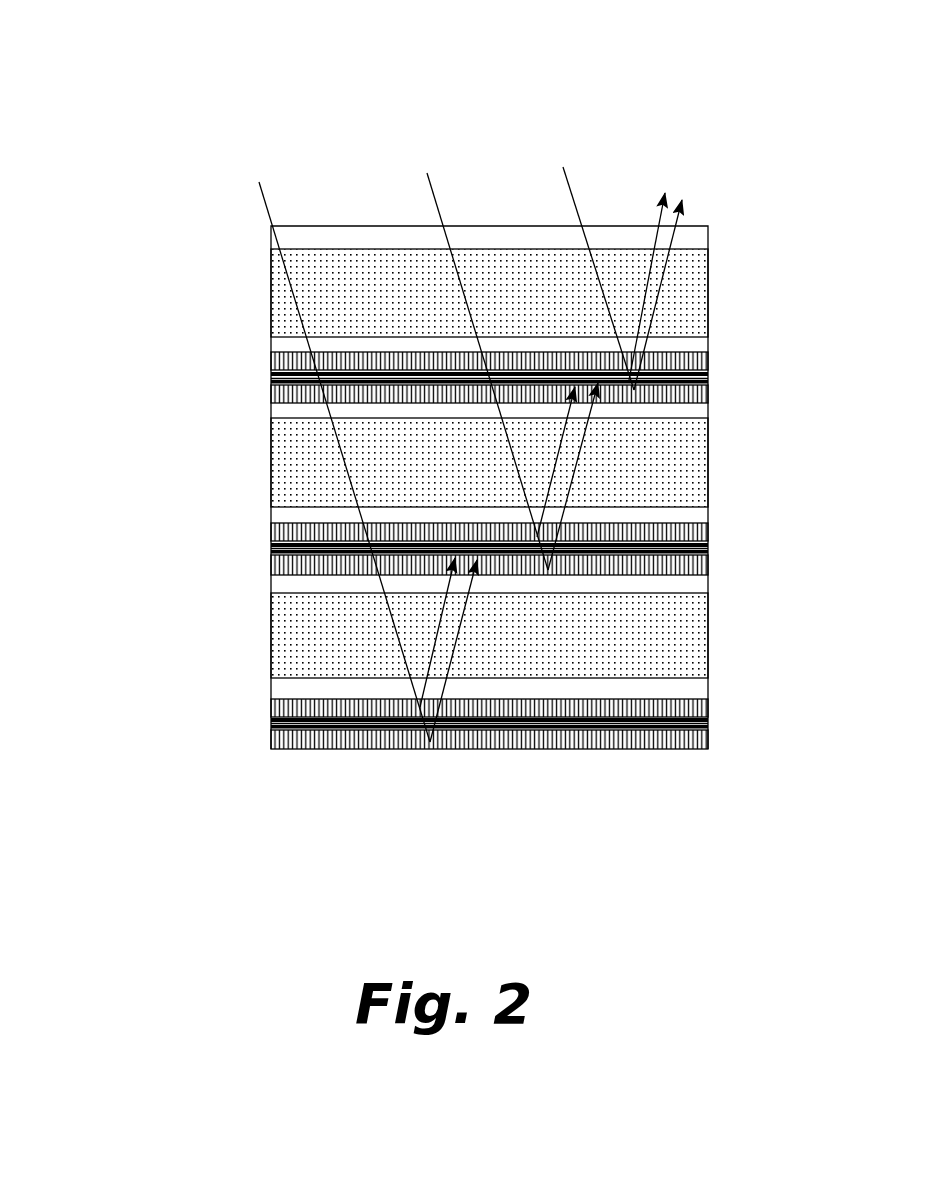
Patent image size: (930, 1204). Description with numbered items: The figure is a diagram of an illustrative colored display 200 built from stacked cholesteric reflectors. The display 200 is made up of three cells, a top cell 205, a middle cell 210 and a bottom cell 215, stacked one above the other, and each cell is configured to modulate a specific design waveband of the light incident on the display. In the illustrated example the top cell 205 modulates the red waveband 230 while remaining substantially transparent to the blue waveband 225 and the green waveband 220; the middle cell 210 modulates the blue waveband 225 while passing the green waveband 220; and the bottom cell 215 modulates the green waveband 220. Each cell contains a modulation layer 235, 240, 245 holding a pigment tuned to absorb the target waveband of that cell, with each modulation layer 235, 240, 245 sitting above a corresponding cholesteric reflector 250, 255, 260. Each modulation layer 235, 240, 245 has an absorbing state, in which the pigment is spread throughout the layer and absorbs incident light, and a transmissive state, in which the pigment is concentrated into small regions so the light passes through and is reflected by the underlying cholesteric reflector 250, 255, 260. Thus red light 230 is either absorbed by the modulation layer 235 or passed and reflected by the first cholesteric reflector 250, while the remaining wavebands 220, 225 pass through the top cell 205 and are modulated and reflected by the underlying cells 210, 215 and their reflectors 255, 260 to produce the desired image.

The colored display 200 is at (158, 75).
The top cell 205 is at (487, 314).
The middle cell 210 is at (487, 494).
The bottom cell 215 is at (487, 679).
The green waveband 220 is at (233, 93).
The blue waveband 225 is at (402, 93).
The red waveband 230 is at (538, 80).
The modulation layer 235 is at (404, 301).
The modulation layer 240 is at (429, 473).
The modulation layer 245 is at (614, 645).
The first cholesteric reflector 250 is at (723, 347).
The cholesteric reflector 255 is at (723, 520).
The cholesteric reflector 260 is at (723, 692).